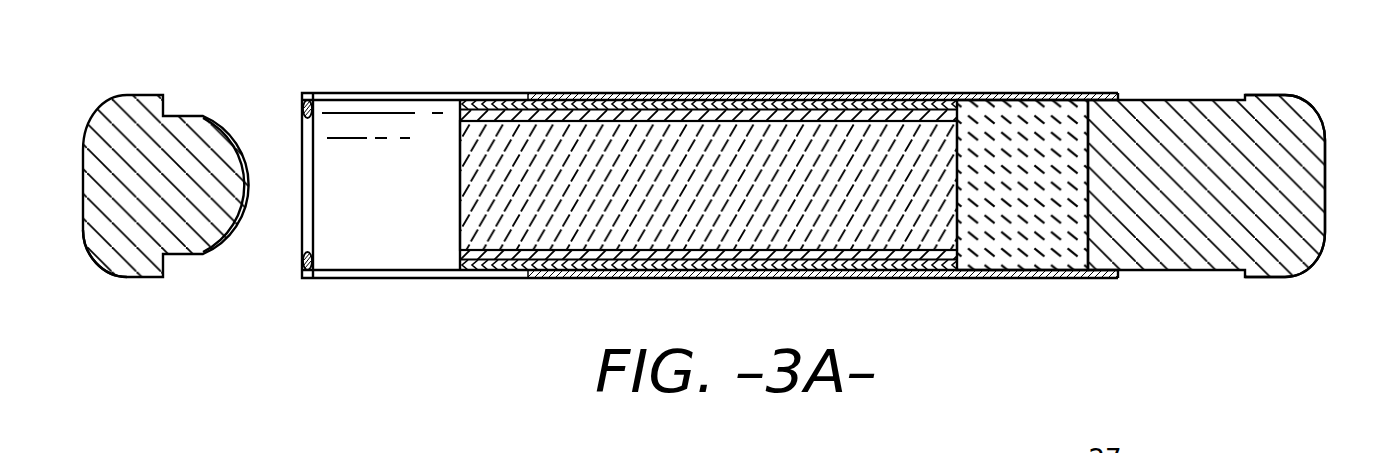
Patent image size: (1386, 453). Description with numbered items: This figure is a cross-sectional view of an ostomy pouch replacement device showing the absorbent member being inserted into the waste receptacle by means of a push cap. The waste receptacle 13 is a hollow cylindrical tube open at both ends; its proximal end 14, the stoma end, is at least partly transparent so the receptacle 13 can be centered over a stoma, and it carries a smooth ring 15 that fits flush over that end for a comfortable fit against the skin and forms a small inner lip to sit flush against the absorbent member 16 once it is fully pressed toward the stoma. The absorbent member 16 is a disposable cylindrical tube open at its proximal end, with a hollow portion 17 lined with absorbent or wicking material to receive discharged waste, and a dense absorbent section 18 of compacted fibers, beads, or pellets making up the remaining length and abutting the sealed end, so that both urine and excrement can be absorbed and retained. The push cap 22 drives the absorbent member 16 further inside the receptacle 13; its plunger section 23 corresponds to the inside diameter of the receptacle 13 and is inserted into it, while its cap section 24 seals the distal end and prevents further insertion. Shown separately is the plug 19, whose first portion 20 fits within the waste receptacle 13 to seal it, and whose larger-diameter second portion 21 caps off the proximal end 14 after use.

The waste receptacle 13 is at (412, 92).
The proximal end 14 is at (370, 158).
The smooth ring 15 is at (300, 110).
The absorbent member 16 is at (512, 263).
The hollow portion 17 is at (680, 150).
The dense absorbent section 18 is at (1010, 148).
The plug 19 is at (90, 93).
The first portion 20 is at (200, 232).
The second portion 21 is at (122, 253).
The push cap 22 is at (1185, 293).
The plunger section 23 is at (1177, 128).
The cap section 24 is at (1277, 123).